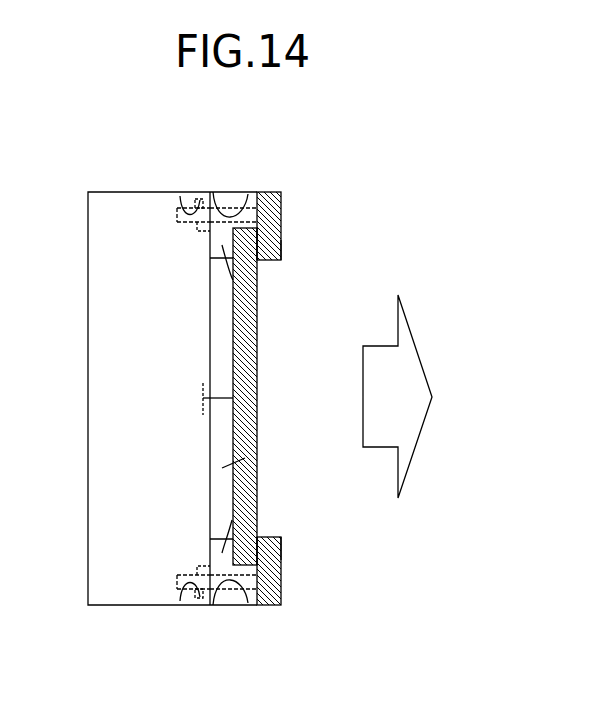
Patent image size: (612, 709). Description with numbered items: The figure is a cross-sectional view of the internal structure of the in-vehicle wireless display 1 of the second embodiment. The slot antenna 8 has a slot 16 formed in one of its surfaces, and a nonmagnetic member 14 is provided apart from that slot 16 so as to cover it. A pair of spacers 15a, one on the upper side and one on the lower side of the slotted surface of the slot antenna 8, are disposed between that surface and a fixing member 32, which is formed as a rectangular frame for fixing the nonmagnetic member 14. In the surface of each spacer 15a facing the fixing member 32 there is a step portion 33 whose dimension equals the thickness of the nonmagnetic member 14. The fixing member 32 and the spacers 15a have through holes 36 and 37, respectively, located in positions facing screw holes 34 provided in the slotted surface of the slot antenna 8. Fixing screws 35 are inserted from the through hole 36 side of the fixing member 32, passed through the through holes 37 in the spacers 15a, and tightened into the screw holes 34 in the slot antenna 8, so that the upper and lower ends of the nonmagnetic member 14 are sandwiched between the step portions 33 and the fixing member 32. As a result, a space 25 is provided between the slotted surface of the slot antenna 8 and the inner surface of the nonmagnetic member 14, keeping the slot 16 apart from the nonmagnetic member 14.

The display 1 is at (135, 143).
The slot antenna 8 is at (130, 410).
The nonmagnetic member 14 is at (262, 355).
The spacer 15a is at (258, 291).
The slot 16 is at (258, 412).
The space 25 is at (258, 456).
The fixing member 32 is at (282, 250).
The step portion 33 is at (283, 238).
The screw hole 34 is at (179, 196).
The fixing screw 35 is at (250, 195).
The through hole 36 is at (282, 218).
The through hole 37 is at (213, 192).